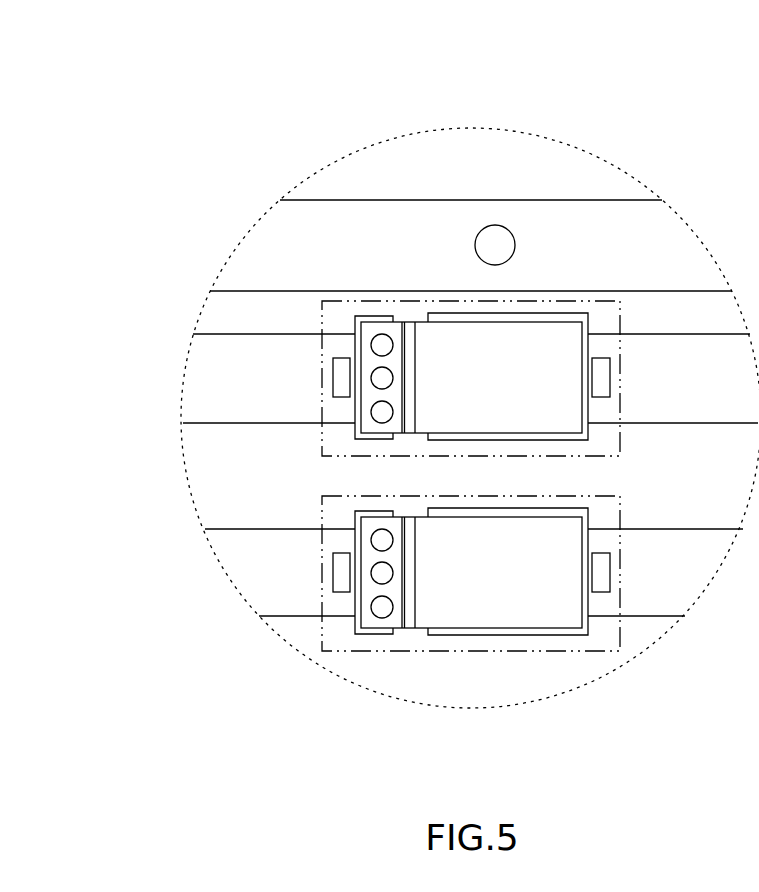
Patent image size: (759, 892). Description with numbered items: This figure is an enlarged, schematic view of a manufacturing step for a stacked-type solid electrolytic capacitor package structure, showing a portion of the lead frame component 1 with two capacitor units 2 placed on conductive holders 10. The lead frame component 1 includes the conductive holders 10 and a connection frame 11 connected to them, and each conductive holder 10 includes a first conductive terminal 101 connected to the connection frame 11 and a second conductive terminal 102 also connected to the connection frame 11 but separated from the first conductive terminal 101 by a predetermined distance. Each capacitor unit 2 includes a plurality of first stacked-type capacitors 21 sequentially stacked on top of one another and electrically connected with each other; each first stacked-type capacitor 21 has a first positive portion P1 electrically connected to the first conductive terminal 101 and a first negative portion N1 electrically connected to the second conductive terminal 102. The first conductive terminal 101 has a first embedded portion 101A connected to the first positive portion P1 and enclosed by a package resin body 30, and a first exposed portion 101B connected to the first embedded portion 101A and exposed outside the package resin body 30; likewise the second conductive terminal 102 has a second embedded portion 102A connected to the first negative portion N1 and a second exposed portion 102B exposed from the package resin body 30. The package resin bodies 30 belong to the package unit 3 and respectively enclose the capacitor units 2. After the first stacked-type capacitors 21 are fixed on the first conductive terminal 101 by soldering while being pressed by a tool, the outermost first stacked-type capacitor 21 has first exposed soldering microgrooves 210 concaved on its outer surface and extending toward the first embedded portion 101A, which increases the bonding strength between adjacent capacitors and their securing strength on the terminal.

The lead frame component 1 is at (523, 187).
The conductive holder 10 is at (272, 63).
The first conductive terminal 101 is at (370, 100).
The first embedded portion 101A is at (341, 348).
The first exposed portion 101B is at (247, 350).
The second conductive terminal 102 is at (715, 100).
The second embedded portion 102A is at (601, 347).
The second exposed portion 102B is at (693, 350).
The connection frame 11 is at (475, 212).
The capacitor unit 2 is at (398, 93).
The first stacked-type capacitor 21 is at (454, 357).
The first exposed soldering microgroove 210 is at (382, 416).
The package resin body 30 is at (320, 375).
The package unit 3 is at (120, 383).
The first positive portion P1 is at (383, 428).
The first negative portion N1 is at (477, 415).